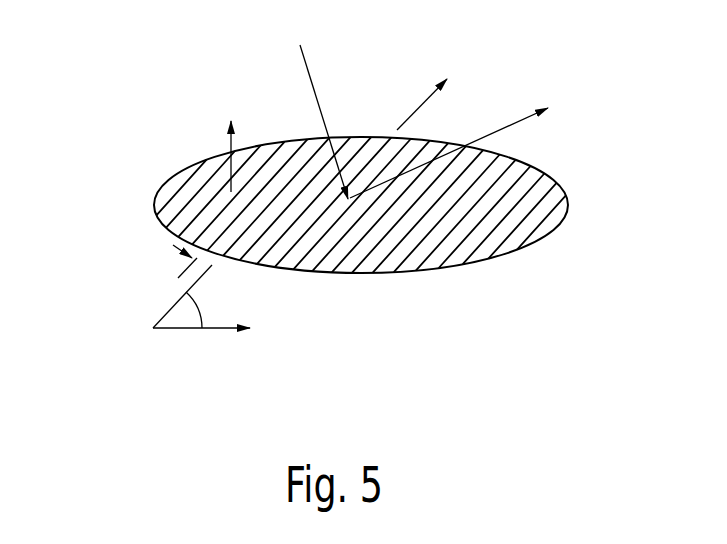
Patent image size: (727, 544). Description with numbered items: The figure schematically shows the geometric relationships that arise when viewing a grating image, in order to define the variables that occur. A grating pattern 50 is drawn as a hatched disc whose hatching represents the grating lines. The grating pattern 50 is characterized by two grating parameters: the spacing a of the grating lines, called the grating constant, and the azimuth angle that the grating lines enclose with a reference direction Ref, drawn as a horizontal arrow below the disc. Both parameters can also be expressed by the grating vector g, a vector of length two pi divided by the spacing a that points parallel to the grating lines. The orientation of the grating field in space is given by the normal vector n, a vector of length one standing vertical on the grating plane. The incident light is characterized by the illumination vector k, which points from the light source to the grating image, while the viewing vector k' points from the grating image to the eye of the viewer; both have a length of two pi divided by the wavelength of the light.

The grating pattern 50 is at (155, 203).
The normal vector n is at (238, 91).
The illumination vector k is at (324, 109).
The grating vector g is at (440, 47).
The viewing vector k' is at (452, 134).
The spacing of the grating lines a is at (208, 277).
The reference direction Ref is at (223, 328).